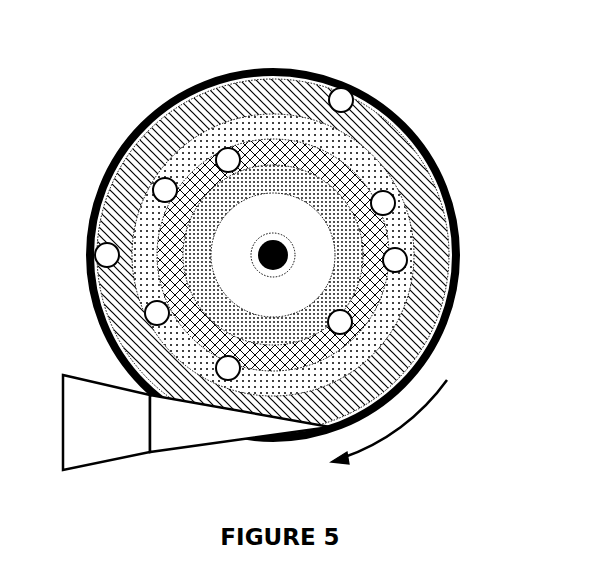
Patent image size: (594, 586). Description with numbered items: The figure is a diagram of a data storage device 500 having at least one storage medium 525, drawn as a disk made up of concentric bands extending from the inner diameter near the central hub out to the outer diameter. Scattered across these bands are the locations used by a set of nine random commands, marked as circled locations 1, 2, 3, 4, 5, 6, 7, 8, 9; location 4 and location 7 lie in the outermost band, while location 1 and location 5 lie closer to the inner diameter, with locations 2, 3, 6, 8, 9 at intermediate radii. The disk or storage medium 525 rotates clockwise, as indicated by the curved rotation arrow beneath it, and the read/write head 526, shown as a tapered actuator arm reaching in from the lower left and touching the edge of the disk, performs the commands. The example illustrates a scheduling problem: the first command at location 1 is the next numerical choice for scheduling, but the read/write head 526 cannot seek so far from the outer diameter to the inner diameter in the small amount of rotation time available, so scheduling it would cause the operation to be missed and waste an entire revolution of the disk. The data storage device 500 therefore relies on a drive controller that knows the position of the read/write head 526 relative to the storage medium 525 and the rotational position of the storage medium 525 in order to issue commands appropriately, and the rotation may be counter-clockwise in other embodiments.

The data storage device 500 is at (298, 255).
The storage medium 525 is at (466, 253).
The read/write head 526 is at (196, 422).
The location of first command 1 is at (340, 322).
The location of second command 2 is at (395, 260).
The location of third command 3 is at (383, 203).
The location of fourth command 4 is at (341, 100).
The location of fifth command 5 is at (228, 160).
The location of sixth command 6 is at (165, 190).
The location of seventh command 7 is at (107, 255).
The location of eighth command 8 is at (157, 313).
The location of ninth command 9 is at (228, 368).